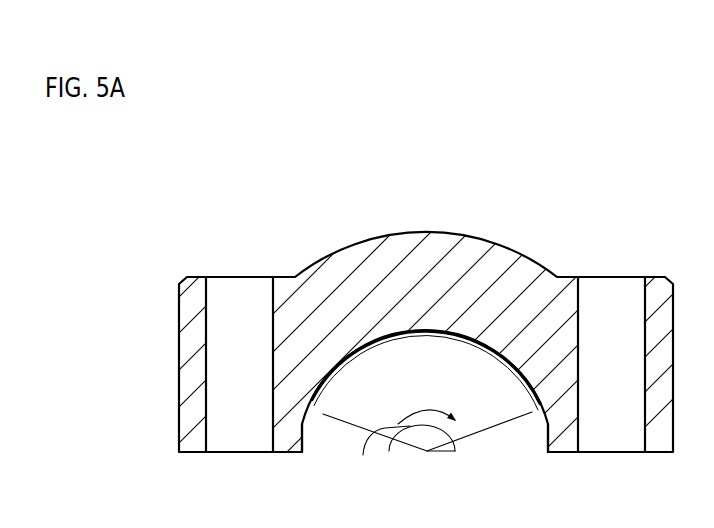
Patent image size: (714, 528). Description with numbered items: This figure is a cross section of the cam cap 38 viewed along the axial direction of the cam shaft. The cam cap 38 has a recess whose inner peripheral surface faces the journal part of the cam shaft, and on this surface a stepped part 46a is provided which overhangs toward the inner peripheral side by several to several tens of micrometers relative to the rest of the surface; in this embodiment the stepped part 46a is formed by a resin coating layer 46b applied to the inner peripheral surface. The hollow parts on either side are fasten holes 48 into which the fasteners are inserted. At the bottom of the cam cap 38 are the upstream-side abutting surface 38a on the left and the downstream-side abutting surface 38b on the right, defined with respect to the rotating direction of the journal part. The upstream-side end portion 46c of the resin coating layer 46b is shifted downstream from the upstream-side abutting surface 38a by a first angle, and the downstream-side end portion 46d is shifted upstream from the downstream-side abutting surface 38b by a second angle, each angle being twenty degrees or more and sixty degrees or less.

The cam cap 38 is at (529, 258).
The upstream-side abutting surface 38a is at (281, 452).
The downstream-side abutting surface 38b is at (567, 452).
The fasten hole 48 is at (242, 298).
The stepped part 46a is at (426, 373).
The resin coating layer 46b is at (403, 366).
The upstream-side end portion 46c is at (297, 430).
The downstream-side end portion 46d is at (536, 415).